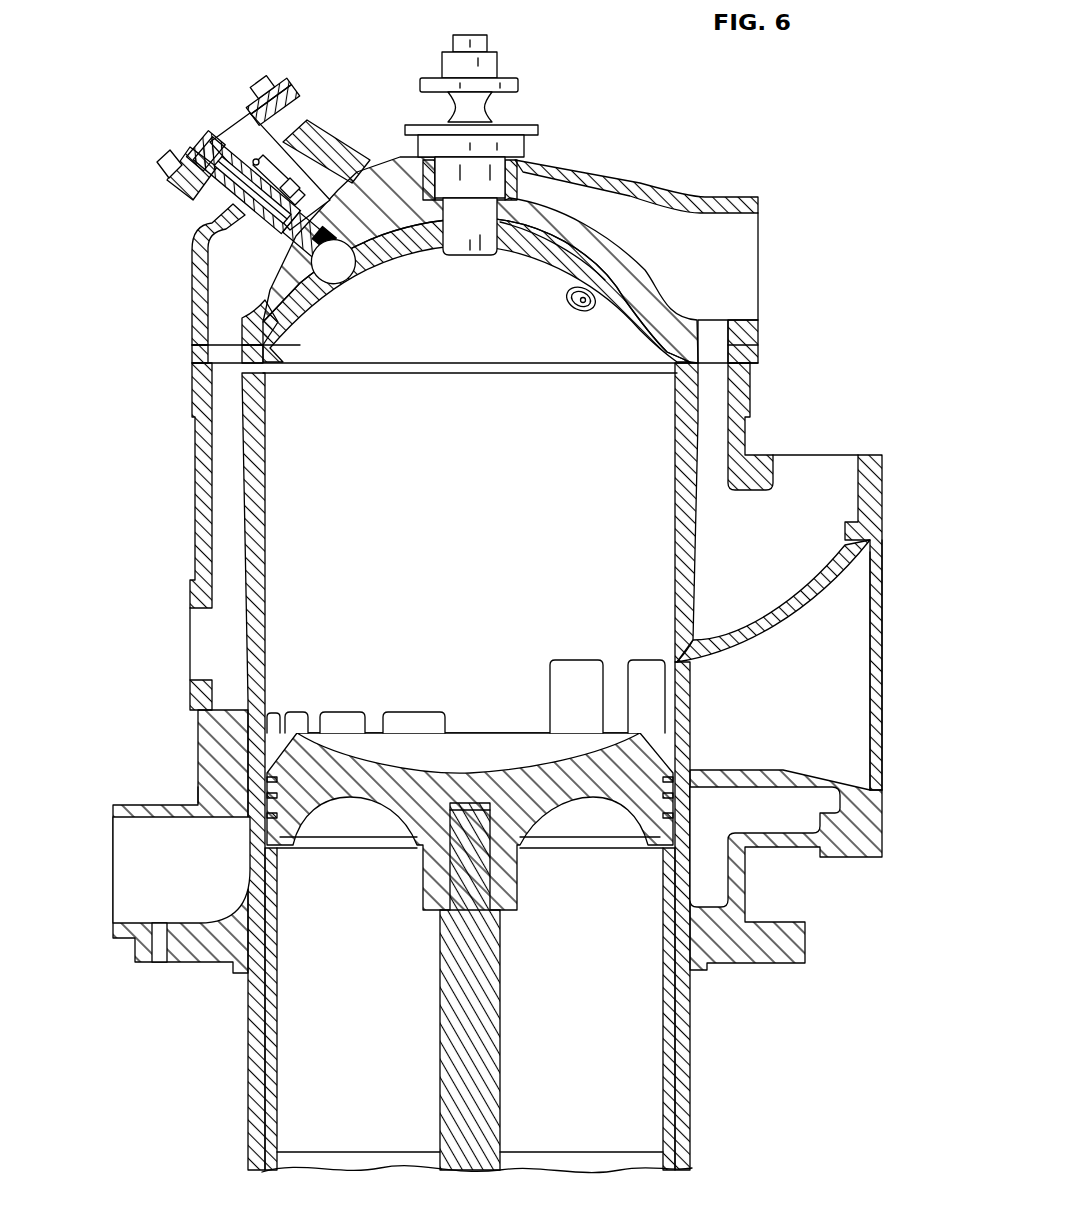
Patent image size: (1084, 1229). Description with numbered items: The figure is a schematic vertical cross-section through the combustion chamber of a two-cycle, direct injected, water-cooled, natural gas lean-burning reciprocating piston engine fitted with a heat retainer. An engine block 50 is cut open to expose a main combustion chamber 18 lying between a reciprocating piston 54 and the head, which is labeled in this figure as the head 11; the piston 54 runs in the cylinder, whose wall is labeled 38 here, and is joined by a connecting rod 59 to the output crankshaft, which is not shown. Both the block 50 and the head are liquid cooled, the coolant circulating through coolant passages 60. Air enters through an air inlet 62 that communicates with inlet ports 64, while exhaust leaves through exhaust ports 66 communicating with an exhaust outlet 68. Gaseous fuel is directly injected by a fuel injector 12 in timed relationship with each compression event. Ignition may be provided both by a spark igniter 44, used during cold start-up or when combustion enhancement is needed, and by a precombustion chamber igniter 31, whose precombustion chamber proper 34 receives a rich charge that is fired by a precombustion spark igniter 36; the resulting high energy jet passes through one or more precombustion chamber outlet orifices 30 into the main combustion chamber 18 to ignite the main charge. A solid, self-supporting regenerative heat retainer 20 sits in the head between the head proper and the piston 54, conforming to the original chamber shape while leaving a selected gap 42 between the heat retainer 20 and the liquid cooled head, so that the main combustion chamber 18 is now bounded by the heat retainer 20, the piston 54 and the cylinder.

The cylinder head 11 is at (716, 203).
The fuel injector 12 is at (528, 128).
The main combustion chamber 18 is at (522, 346).
The regenerative heat retainer 20 is at (633, 318).
The precombustion chamber outlet orifices 30 is at (307, 236).
The precombustion chamber igniter 31 is at (157, 216).
The precombustion chamber proper 34 is at (333, 272).
The precombustion spark igniter 36 is at (248, 177).
The cylinder liner 38 is at (277, 1030).
The gap 42 is at (518, 220).
The spark igniter 44 is at (566, 294).
The engine block 50 is at (360, 949).
The reciprocating piston 54 is at (370, 797).
The connecting rod 59 is at (453, 1050).
The coolant passages 60 is at (783, 507).
The air inlet 62 is at (121, 897).
The inlet ports 64 is at (412, 720).
The exhaust ports 66 is at (652, 672).
The exhaust outlet 68 is at (848, 668).